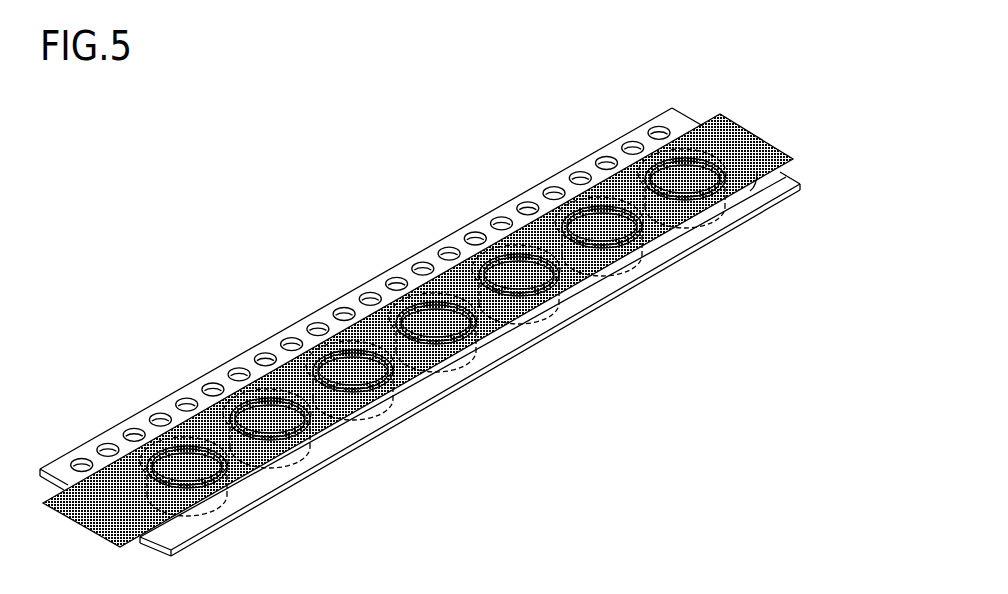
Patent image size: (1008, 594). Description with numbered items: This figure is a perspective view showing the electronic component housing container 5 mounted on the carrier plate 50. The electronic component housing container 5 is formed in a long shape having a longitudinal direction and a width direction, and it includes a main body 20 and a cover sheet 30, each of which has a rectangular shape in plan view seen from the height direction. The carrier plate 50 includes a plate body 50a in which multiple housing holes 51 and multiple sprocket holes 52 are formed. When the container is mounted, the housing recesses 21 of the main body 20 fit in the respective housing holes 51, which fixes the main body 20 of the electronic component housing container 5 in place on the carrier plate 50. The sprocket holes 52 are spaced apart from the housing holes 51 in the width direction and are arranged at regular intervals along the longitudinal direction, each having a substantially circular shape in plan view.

The electronic component housing container 5 is at (420, 313).
The main body 20 is at (470, 364).
The housing recess 21 is at (396, 423).
The cover sheet 30 is at (744, 140).
The carrier plate 50 is at (413, 322).
The plate body 50a is at (452, 282).
The housing hole 51 is at (323, 346).
The sprocket hole 52 is at (213, 385).